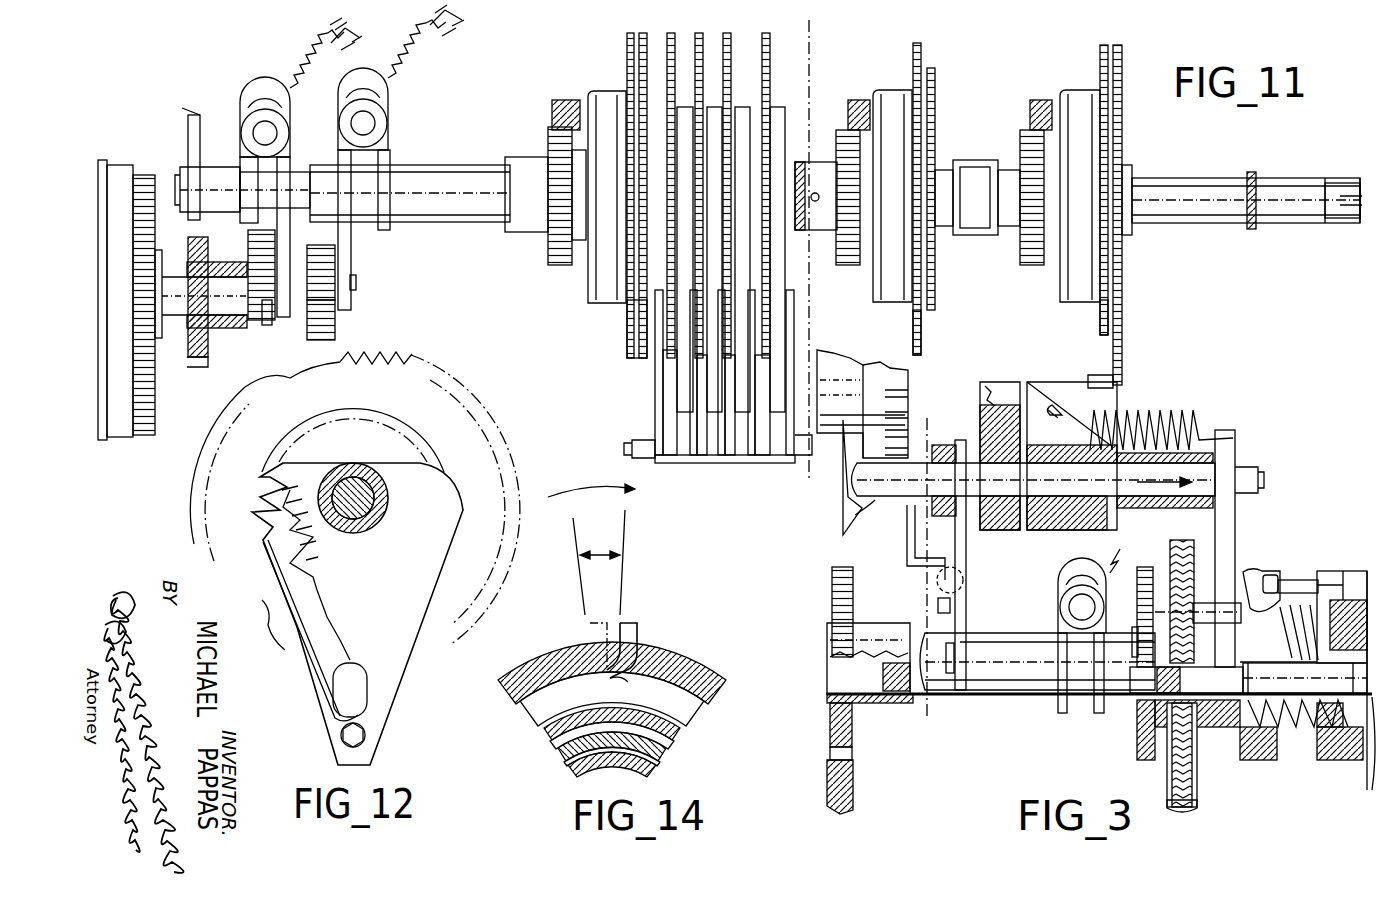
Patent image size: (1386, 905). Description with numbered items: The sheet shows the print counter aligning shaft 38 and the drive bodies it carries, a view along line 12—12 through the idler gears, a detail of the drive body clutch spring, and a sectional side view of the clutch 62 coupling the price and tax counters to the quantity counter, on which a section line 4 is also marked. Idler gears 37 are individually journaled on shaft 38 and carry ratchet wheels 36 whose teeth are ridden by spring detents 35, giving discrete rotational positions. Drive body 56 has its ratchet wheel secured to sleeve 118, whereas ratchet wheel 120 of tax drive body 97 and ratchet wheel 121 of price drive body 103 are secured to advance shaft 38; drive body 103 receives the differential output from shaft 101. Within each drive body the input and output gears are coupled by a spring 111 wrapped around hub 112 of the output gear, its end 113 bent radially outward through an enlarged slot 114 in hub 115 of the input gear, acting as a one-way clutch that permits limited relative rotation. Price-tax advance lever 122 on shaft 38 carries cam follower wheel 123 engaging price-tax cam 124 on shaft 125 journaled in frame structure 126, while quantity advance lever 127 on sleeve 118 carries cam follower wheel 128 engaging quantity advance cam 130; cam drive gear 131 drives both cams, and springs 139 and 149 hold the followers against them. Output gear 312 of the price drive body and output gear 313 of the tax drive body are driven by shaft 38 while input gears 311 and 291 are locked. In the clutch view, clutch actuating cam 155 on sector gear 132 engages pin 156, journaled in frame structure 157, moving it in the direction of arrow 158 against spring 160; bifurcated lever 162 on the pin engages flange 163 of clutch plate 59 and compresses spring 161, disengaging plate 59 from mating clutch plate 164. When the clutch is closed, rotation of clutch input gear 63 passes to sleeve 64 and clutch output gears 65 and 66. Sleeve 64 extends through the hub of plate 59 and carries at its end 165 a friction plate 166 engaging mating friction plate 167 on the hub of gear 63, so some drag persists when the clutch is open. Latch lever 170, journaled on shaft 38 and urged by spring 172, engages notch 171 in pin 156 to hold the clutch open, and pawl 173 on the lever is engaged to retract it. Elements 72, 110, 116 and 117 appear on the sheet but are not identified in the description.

In FIG. 3, the section line 4- 4 is at (927, 428).
In FIG. 11, the line 12— 12 is at (840, 33).
In FIG. 11, the spring detents 35 is at (707, 377).
In FIG. 12, the spring detents 35 is at (300, 638).
In FIG. 11, the ratchet wheels 36 is at (725, 100).
In FIG. 12, the ratchet wheels 36 is at (262, 495).
In FIG. 11, the idler gears 37 is at (632, 85).
In FIG. 12, the idler gears 37 is at (428, 395).
In FIG. 12, the advance shaft 38 is at (380, 505).
In FIG. 3, the advance shaft 38 is at (1010, 645).
In FIG. 11, the drive body 56 is at (628, 347).
In FIG. 3, the clutch plate 59 is at (1197, 768).
In FIG. 3, the clutch 62 is at (1183, 808).
In FIG. 3, the clutch input gear 63 is at (1342, 578).
In FIG. 3, the sleeve 64 is at (980, 697).
In FIG. 3, the clutch output gear 65 is at (1138, 735).
In FIG. 3, the clutch output gear 66 is at (838, 590).
In FIG. 3, the frame 72 is at (855, 790).
In FIG. 11, the tax drive body 97 is at (913, 327).
In FIG. 11, the shaft 101 is at (1098, 380).
In FIG. 11, the price drive body 103 is at (1100, 325).
In FIG. 11, the stop pin 110 is at (358, 283).
In FIG. 14, the spring 111 is at (517, 700).
In FIG. 14, the hub 112 is at (540, 730).
In FIG. 14, the end 113 is at (630, 620).
In FIG. 14, the slot 114 is at (640, 648).
In FIG. 14, the hub 115 is at (700, 672).
In FIG. 11, the pinion 116 is at (560, 115).
In FIG. 11, the gear 117 is at (553, 245).
In FIG. 11, the sleeve 118 is at (437, 178).
In FIG. 11, the ratchet wheel 120 is at (848, 257).
In FIG. 11, the ratchet wheel 121 is at (1030, 250).
In FIG. 11, the price-tax advance lever 122 is at (255, 95).
In FIG. 11, the cam follower wheel 123 is at (258, 292).
In FIG. 11, the price-tax cam 124 is at (270, 300).
In FIG. 11, the shaft 125 is at (215, 292).
In FIG. 11, the frame structure 126 is at (203, 365).
In FIG. 11, the quantity advance lever 127 is at (386, 100).
In FIG. 11, the cam follower wheel 128 is at (325, 275).
In FIG. 11, the quantity advance cam 130 is at (320, 325).
In FIG. 11, the cam drive gear 131 is at (150, 397).
In FIG. 3, the sector gear 132 is at (898, 400).
In FIG. 11, the spring 139 is at (307, 72).
In FIG. 11, the spring 149 is at (435, 62).
In FIG. 3, the clutch actuating cam 155 is at (843, 512).
In FIG. 3, the pin 156 is at (870, 515).
In FIG. 3, the frame structure 157 is at (1008, 518).
In FIG. 3, the arrow 158 is at (1128, 505).
In FIG. 3, the spring 160 is at (1155, 430).
In FIG. 3, the spring 161 is at (1295, 600).
In FIG. 3, the bifurcated lever 162 is at (1232, 550).
In FIG. 3, the flange 163 is at (1278, 562).
In FIG. 3, the clutch plate 164 is at (1170, 782).
In FIG. 3, the end 165 is at (1370, 770).
In FIG. 3, the friction plate 166 is at (1350, 762).
In FIG. 3, the mating friction plate 167 is at (1315, 737).
In FIG. 3, the latch lever 170 is at (965, 520).
In FIG. 3, the notch 171 is at (920, 505).
In FIG. 3, the spring 172 is at (937, 588).
In FIG. 3, the pawl 173 is at (918, 562).
In FIG. 11, the input gear 291 is at (1128, 312).
In FIG. 11, the input gear 311 is at (937, 75).
In FIG. 11, the output gear 312 is at (1103, 62).
In FIG. 11, the output gear 313 is at (912, 60).